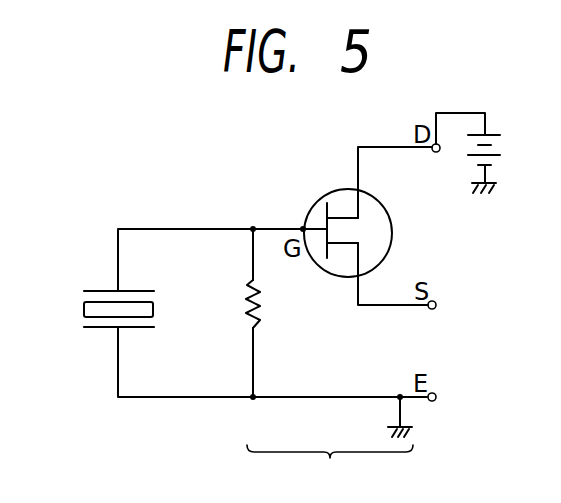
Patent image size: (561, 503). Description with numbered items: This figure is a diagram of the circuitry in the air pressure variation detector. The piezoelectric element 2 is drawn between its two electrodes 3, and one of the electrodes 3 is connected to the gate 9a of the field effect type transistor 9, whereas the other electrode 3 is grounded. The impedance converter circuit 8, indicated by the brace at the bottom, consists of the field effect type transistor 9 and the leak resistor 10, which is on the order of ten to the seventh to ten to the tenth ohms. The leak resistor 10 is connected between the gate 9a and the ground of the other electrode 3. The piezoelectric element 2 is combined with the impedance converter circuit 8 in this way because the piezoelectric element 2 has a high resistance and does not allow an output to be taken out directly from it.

The piezoelectric element 2 is at (84, 309).
The electrodes 3 is at (98, 290).
The impedance converter circuit 8 is at (330, 468).
The field effect type transistor 9 is at (340, 188).
The gate 9a is at (302, 228).
The leak resistor 10 is at (262, 312).